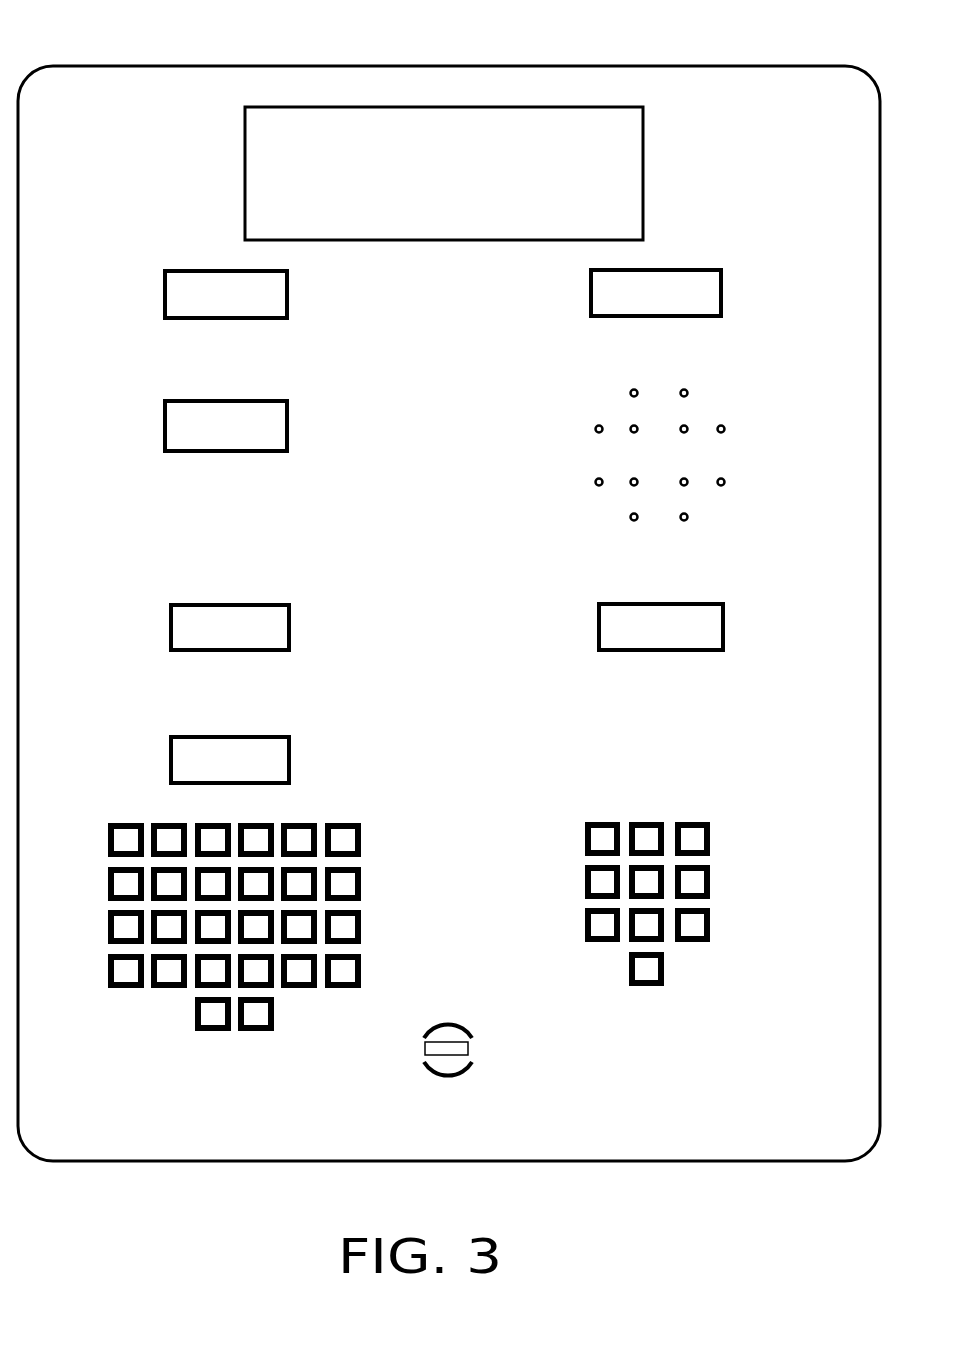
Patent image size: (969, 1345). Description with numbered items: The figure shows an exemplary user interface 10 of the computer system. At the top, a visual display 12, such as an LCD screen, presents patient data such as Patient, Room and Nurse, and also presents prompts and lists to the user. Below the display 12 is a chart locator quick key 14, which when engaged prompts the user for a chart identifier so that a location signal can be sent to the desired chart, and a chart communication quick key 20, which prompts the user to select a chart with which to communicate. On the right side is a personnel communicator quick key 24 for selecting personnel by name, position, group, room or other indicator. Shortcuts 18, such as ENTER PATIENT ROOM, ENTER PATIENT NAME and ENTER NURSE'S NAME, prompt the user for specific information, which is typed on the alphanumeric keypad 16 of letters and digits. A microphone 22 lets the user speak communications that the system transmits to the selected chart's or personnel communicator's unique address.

The user interface 10 is at (118, 44).
The visual display 12 is at (245, 173).
The chart locator quick key 14 is at (163, 292).
The alphanumeric keypad 16 is at (152, 798).
The shortcuts 18 is at (597, 626).
The chart communication quick key 20 is at (163, 423).
The microphone 22 is at (447, 1048).
The personnel communicator quick key 24 is at (723, 290).